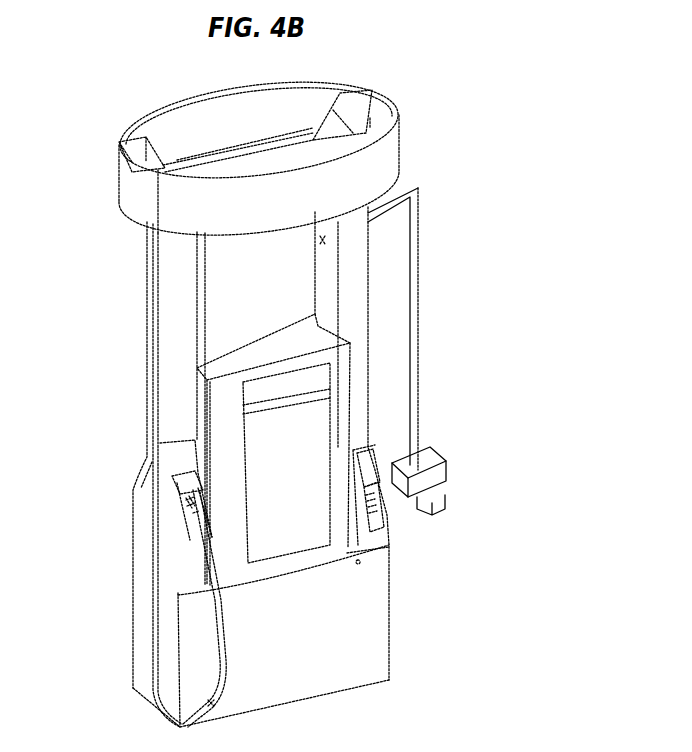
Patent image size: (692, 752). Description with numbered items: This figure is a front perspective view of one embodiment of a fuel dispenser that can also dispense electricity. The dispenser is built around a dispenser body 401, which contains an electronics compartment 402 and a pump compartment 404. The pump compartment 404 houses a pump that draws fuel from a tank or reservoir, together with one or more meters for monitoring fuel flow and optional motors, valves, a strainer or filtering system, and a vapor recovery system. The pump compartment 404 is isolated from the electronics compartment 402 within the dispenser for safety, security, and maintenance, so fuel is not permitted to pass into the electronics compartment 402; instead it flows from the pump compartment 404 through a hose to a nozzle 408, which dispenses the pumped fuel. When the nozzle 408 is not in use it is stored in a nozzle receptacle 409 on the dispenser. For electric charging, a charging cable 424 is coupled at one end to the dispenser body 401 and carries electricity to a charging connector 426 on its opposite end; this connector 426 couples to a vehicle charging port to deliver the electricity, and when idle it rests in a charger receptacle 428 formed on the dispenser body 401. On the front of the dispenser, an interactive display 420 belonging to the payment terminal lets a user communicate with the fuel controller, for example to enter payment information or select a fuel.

The dispenser body 401 is at (402, 148).
The electronics compartment 402 is at (200, 384).
The pump compartment 404 is at (349, 630).
The nozzle 408 is at (184, 500).
The nozzle receptacle 409 is at (187, 577).
The interactive display 420 is at (259, 440).
The charging cable 424 is at (421, 340).
The charging connector 426 is at (449, 467).
The charger receptacle 428 is at (390, 521).